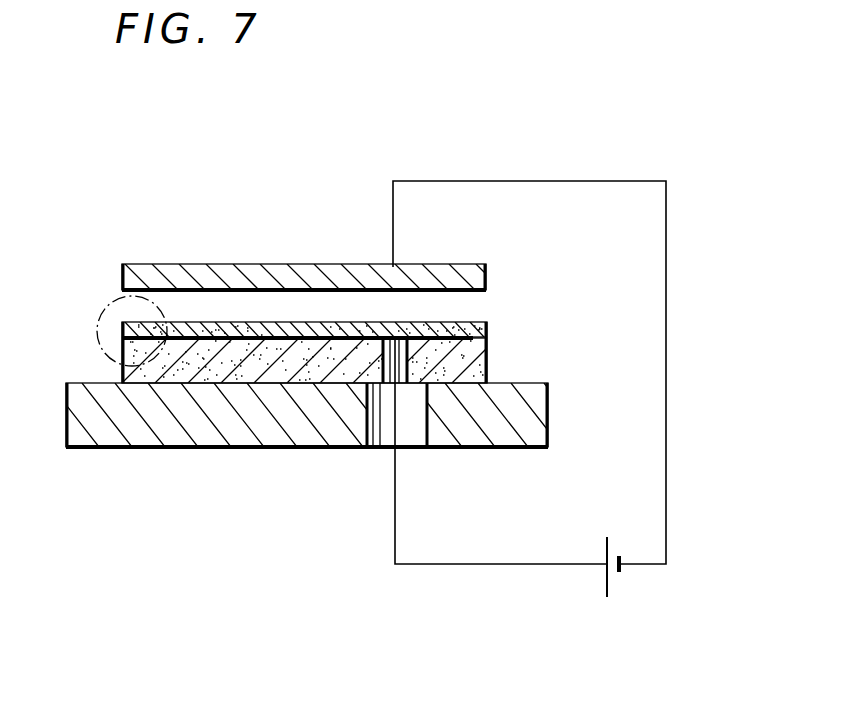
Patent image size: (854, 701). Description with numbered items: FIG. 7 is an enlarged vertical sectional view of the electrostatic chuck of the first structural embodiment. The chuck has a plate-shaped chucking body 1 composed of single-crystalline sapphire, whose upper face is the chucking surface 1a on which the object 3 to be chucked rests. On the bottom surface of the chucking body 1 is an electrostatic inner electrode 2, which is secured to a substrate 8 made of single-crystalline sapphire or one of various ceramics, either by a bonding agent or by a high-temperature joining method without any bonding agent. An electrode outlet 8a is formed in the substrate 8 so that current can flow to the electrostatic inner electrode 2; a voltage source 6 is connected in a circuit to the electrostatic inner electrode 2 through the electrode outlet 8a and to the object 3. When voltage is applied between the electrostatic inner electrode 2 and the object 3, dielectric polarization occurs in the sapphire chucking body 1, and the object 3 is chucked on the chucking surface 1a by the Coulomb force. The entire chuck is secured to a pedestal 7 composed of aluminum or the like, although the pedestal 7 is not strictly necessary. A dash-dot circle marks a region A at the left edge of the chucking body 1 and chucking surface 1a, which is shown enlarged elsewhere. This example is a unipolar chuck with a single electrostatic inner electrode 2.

The chucking body 1 is at (488, 331).
The chucking surface 1a is at (305, 322).
The electrostatic inner electrode 2 is at (467, 348).
The object to be chucked 3 is at (147, 272).
The DC power supply 6 is at (610, 580).
The pedestal 7 is at (225, 437).
The substrate 8 is at (473, 368).
The electrode outlet 8a is at (397, 388).
The region A is at (97, 331).